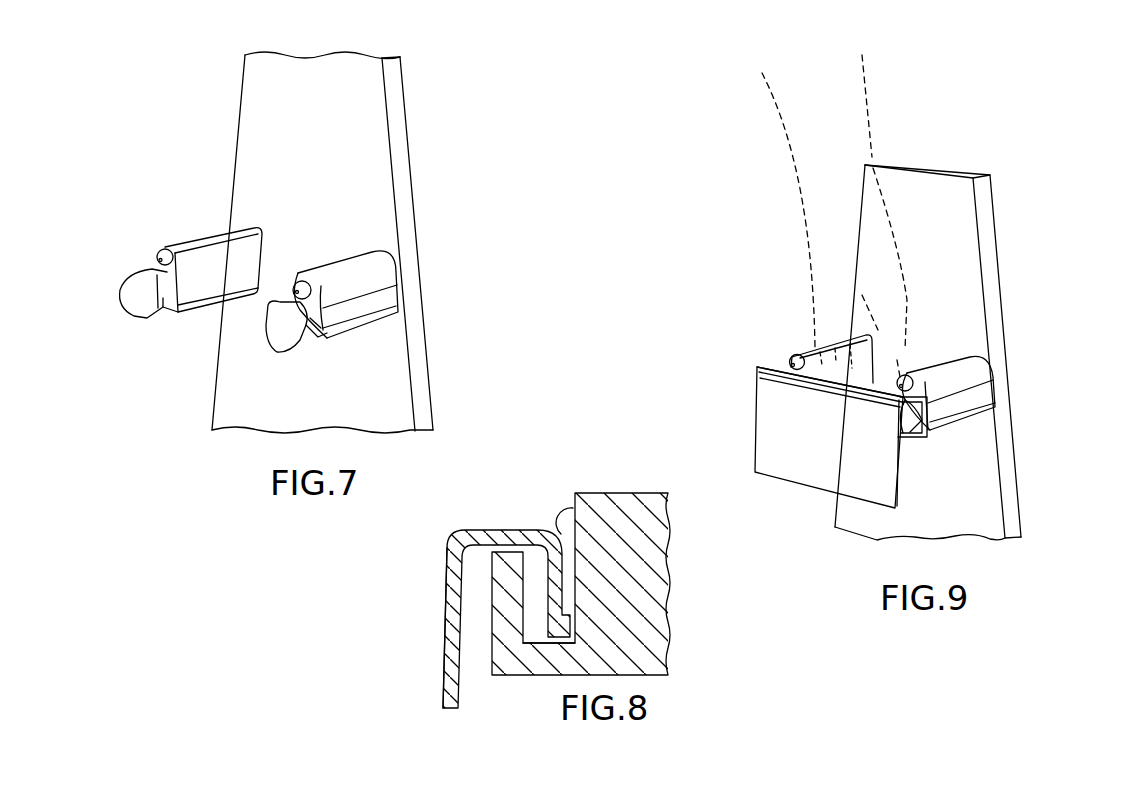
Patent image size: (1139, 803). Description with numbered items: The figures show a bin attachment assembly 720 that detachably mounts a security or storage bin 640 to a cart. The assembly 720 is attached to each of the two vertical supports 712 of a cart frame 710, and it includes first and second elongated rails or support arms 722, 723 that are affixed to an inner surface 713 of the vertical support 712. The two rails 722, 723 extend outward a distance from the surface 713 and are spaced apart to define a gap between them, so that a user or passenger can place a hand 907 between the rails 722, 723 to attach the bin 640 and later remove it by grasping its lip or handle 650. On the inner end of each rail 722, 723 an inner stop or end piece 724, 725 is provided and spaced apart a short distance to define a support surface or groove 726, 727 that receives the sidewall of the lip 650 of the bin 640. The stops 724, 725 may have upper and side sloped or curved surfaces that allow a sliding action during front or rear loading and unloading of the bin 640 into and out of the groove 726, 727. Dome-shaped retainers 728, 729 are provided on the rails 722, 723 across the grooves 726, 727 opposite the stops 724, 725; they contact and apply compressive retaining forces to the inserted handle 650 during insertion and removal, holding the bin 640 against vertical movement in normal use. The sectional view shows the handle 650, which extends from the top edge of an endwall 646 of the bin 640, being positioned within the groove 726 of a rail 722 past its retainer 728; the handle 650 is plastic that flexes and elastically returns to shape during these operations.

In FIG. 7, the cart frame 710 is at (462, 187).
In FIG. 9, the cart frame 710 is at (1033, 274).
In FIG. 7, the vertical support 712 is at (403, 131).
In FIG. 9, the vertical support 712 is at (997, 245).
In FIG. 7, the inner surface 713 is at (250, 85).
In FIG. 7, the bin attachment assembly 720 is at (164, 377).
In FIG. 8, the bin attachment assembly 720 is at (677, 689).
In FIG. 9, the bin attachment assembly 720 is at (1027, 361).
In FIG. 7, the first elongated rail 722 is at (185, 242).
In FIG. 8, the first elongated rail 722 is at (613, 492).
In FIG. 9, the first elongated rail 722 is at (797, 354).
In FIG. 7, the second elongated rail 723 is at (387, 300).
In FIG. 9, the second elongated rail 723 is at (977, 367).
In FIG. 8, the inner stop 724 is at (492, 590).
In FIG. 7, the inner stop 725 is at (295, 343).
In FIG. 9, the inner stop 725 is at (932, 431).
In FIG. 7, the groove 726 is at (174, 313).
In FIG. 8, the groove 726 is at (536, 641).
In FIG. 7, the groove 727 is at (318, 338).
In FIG. 7, the retainer 728 is at (159, 249).
In FIG. 8, the retainer 728 is at (563, 505).
In FIG. 9, the retainer 728 is at (797, 362).
In FIG. 7, the retainer 729 is at (128, 280).
In FIG. 8, the bin 640 is at (430, 645).
In FIG. 9, the bin 640 is at (812, 512).
In FIG. 8, the endwall 646 is at (447, 588).
In FIG. 8, the lip 650 is at (522, 530).
In FIG. 9, the lip 650 is at (764, 366).
In FIG. 9, the hand 907 is at (867, 105).